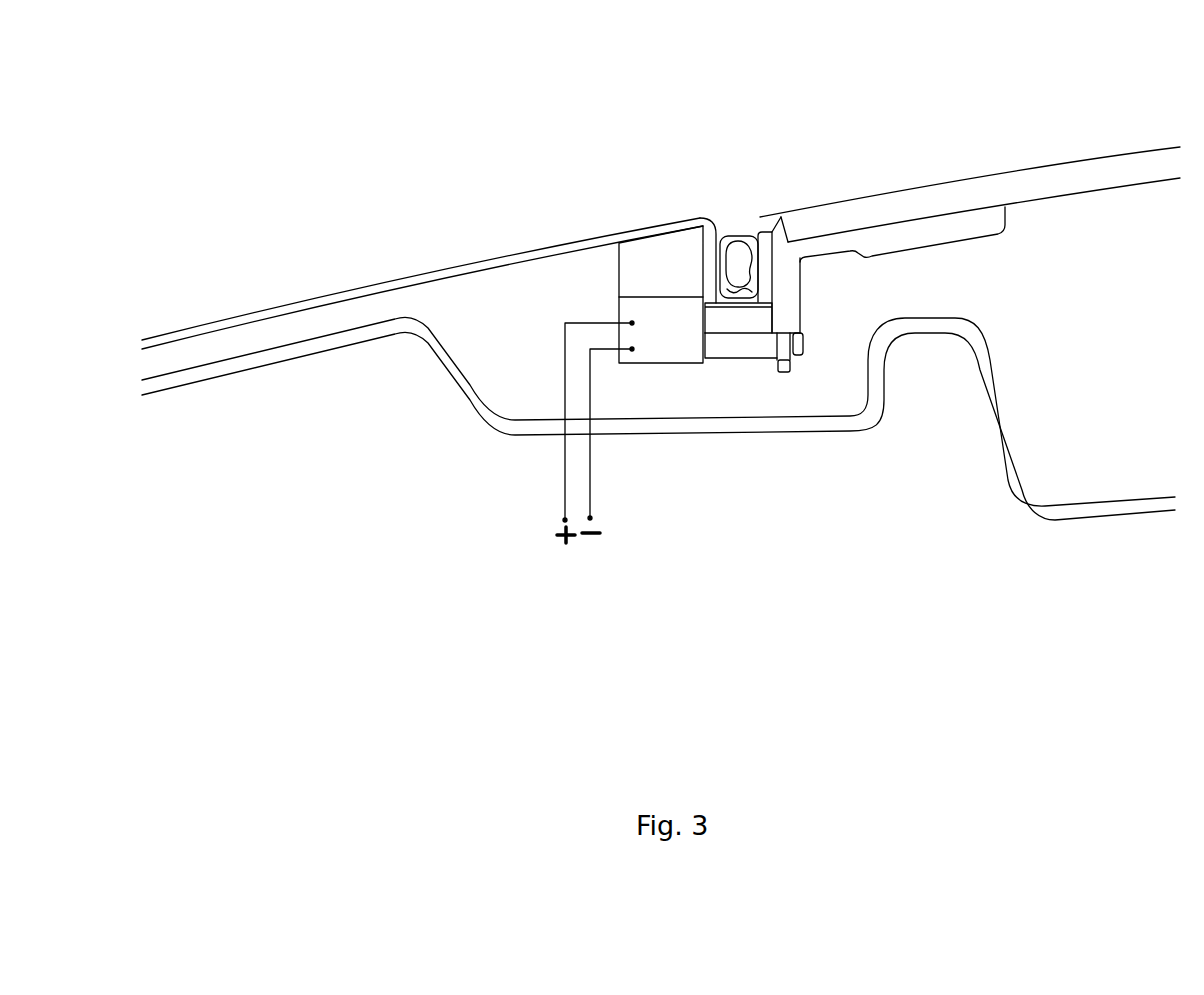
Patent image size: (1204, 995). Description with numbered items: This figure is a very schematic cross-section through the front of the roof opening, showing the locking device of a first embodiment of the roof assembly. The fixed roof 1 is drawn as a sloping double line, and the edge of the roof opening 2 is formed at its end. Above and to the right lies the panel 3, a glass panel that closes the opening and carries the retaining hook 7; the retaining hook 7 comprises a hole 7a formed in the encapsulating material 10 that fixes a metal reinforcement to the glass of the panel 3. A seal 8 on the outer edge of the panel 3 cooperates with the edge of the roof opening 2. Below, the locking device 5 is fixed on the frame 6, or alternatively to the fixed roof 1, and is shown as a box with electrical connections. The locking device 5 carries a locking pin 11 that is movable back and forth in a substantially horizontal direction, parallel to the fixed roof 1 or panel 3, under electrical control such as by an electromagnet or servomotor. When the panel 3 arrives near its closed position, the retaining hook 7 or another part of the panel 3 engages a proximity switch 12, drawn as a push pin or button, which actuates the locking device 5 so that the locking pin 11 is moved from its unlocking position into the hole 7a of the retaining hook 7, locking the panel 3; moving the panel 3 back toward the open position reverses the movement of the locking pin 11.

The fixed roof 1 is at (352, 292).
The roof opening 2 is at (738, 233).
The panel 3 is at (1012, 188).
The locking device 5 is at (682, 382).
The frame 6 is at (994, 427).
The retaining hook 7 is at (790, 290).
The hole 7a is at (790, 368).
The seal 8 is at (762, 235).
The encapsulating material 10 is at (908, 235).
The locking pin 11 is at (748, 343).
The proximity switch 12 is at (723, 317).